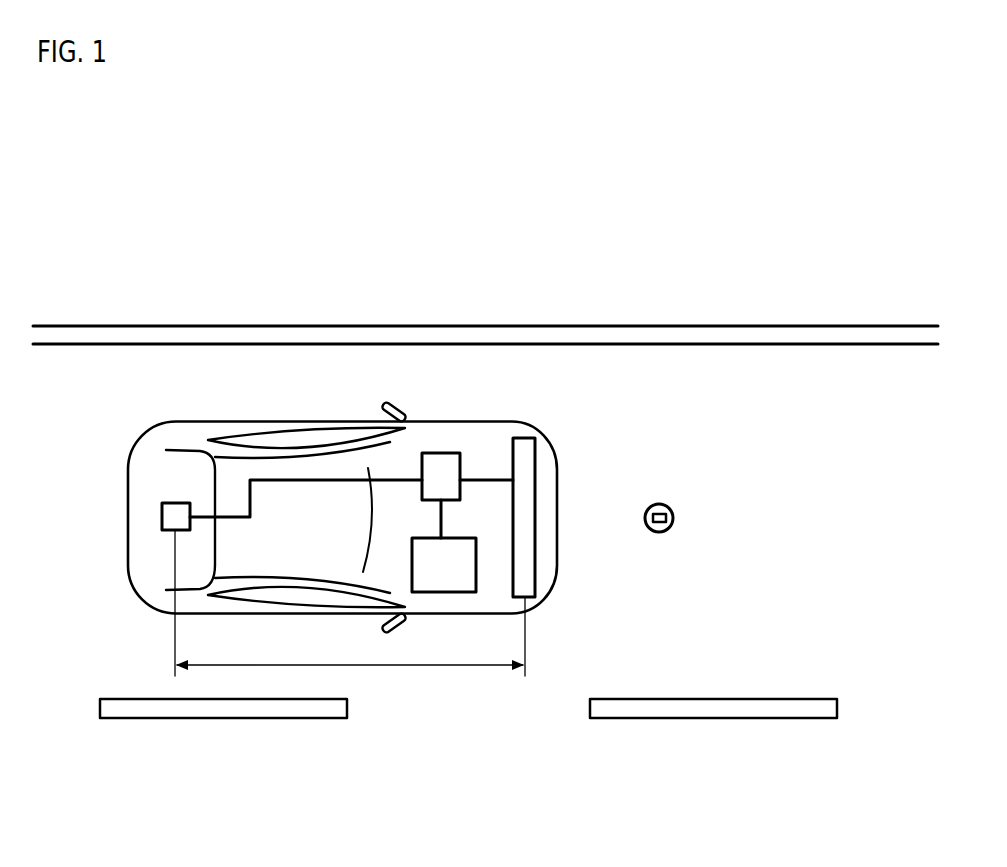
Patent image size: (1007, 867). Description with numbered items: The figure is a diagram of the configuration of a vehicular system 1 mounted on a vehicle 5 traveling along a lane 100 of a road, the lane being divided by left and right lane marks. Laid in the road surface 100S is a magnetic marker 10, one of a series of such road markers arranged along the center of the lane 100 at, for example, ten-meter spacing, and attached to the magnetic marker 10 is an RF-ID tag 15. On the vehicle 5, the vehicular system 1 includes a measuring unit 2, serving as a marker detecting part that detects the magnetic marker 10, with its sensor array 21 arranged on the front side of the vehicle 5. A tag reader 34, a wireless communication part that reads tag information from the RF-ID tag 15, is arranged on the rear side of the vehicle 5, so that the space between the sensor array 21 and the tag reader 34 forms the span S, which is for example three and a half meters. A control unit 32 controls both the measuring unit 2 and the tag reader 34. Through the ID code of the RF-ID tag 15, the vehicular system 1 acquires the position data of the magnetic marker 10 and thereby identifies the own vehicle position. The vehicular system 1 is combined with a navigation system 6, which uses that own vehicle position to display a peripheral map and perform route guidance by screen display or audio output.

The vehicular system 1 is at (568, 299).
The vehicle 5 is at (284, 387).
The measuring unit 2 is at (503, 408).
The sensor array 21 is at (523, 438).
The control unit 32 is at (438, 453).
The tag reader 34 is at (170, 503).
The navigation system 6 is at (445, 595).
The magnetic marker 10 is at (717, 403).
The RF-ID tag 15 is at (677, 507).
The lane 100 is at (485, 298).
The road surface 100S is at (485, 280).